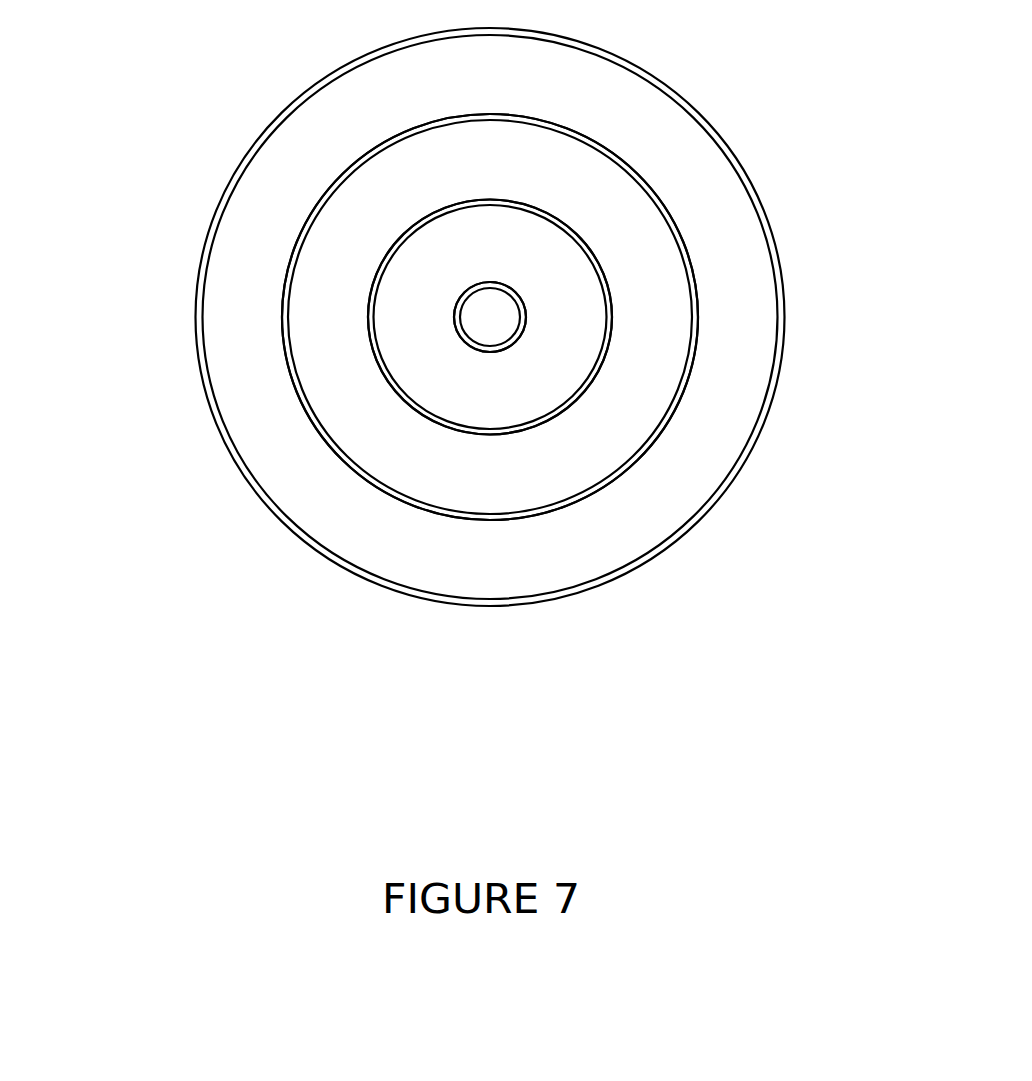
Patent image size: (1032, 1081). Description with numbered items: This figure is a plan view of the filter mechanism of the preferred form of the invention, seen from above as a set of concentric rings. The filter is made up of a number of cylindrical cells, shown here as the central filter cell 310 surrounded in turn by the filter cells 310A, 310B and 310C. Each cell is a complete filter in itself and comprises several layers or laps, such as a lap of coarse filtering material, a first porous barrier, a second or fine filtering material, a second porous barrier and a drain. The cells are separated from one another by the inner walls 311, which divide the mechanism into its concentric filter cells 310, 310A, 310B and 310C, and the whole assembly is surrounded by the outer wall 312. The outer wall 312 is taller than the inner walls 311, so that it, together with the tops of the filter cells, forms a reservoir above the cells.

The filter cell 310 is at (665, 213).
The filter cell 310A is at (490, 317).
The filter cell 310B is at (490, 317).
The filter cell 310C is at (490, 317).
The inner walls 311 is at (455, 295).
The outer wall 312 is at (456, 392).